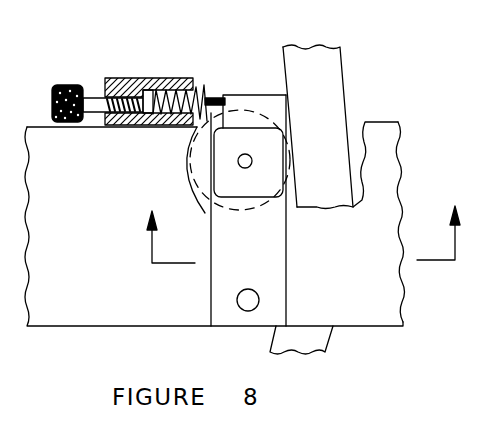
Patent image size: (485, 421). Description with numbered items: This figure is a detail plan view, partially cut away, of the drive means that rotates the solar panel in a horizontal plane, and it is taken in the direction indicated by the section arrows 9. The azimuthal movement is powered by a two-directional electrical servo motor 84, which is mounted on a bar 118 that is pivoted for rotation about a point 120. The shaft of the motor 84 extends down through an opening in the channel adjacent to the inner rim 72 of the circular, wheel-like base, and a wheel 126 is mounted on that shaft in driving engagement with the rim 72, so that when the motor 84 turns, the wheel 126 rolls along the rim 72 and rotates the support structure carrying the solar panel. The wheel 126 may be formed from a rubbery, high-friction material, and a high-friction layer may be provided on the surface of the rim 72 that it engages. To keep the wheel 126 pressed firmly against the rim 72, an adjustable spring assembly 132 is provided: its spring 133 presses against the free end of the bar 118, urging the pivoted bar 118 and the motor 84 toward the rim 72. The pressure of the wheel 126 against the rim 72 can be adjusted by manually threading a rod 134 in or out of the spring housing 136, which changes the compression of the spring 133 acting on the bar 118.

The section line 9- 9 is at (303, 234).
The rim 72 is at (283, 63).
The servo motor 84 is at (233, 128).
The bar 118 is at (211, 293).
The point 120 is at (240, 309).
The wheel 126 is at (297, 120).
The adjustable spring assembly 132 is at (112, 52).
The spring 133 is at (197, 100).
The rod 134 is at (88, 97).
The spring housing 136 is at (173, 77).